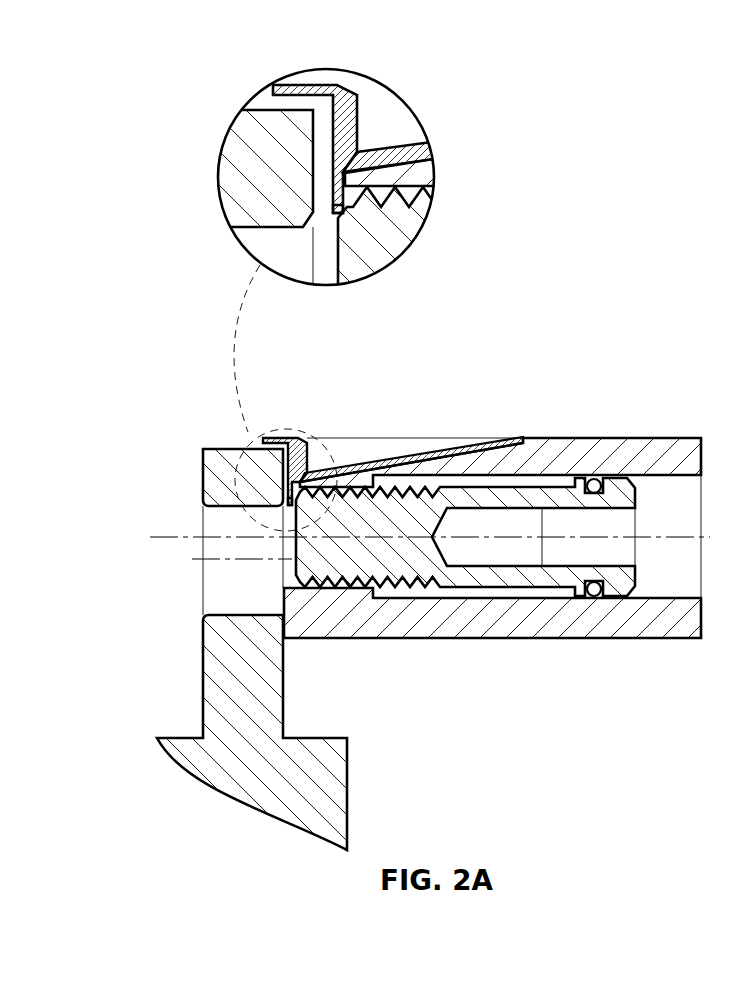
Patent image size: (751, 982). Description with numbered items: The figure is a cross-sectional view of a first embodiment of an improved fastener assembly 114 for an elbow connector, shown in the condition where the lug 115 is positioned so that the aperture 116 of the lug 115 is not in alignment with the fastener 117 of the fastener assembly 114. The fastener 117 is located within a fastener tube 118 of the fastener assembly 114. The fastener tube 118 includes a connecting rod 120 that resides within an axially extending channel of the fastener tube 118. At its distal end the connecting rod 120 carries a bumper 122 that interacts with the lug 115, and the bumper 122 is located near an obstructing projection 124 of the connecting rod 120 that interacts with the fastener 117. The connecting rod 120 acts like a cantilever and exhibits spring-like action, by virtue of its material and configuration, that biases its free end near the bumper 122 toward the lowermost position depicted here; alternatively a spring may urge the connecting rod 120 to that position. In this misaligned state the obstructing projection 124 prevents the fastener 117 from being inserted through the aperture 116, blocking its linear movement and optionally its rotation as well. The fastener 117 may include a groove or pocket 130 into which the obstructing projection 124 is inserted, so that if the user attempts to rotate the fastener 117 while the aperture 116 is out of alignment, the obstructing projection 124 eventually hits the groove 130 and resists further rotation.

The fastener assembly 114 is at (573, 340).
The lug 115 is at (202, 748).
The aperture 116 is at (193, 515).
The fastener 117 is at (417, 570).
The fastener tube 118 is at (645, 625).
The connecting rod 120 is at (358, 462).
The bumper 122 is at (278, 437).
The obstructing projection 124 is at (293, 495).
The groove 130 is at (293, 567).